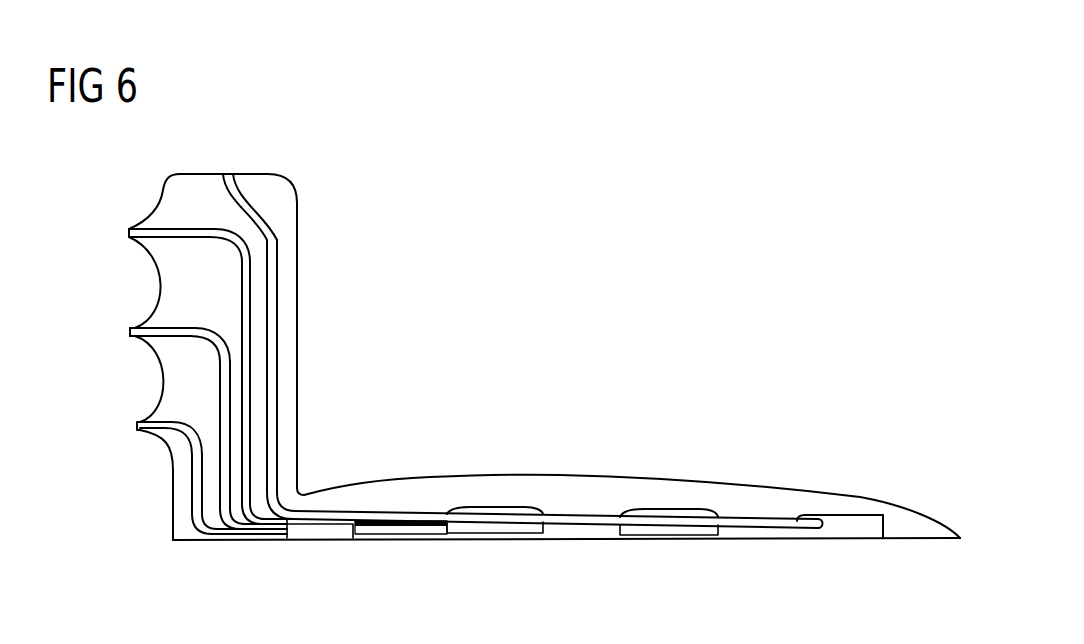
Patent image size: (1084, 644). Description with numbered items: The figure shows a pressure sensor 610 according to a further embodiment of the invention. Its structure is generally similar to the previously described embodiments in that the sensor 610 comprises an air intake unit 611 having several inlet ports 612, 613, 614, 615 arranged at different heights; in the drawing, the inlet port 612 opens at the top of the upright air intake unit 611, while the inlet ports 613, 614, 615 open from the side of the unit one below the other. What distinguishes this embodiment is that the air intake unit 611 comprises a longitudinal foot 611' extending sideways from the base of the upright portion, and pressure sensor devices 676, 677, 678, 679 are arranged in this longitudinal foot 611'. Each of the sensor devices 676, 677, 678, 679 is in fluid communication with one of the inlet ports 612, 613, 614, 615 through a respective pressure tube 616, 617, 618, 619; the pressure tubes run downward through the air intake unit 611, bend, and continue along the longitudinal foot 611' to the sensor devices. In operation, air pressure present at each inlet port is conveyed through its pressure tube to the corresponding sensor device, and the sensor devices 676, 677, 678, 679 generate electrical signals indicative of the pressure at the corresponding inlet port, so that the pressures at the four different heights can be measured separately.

The pressure sensor 610 is at (698, 193).
The air intake unit 611 is at (544, 357).
The longitudinal foot 611' is at (628, 478).
The inlet port 612 is at (227, 173).
The inlet port 613 is at (129, 233).
The inlet port 614 is at (130, 332).
The inlet port 615 is at (137, 425).
The pressure tube 616 is at (277, 283).
The pressure tube 617 is at (250, 328).
The pressure tube 618 is at (215, 407).
The pressure tube 619 is at (190, 488).
The pressure sensor device 676 is at (840, 532).
The pressure sensor device 677 is at (630, 533).
The pressure sensor device 678 is at (468, 533).
The pressure sensor device 679 is at (318, 535).